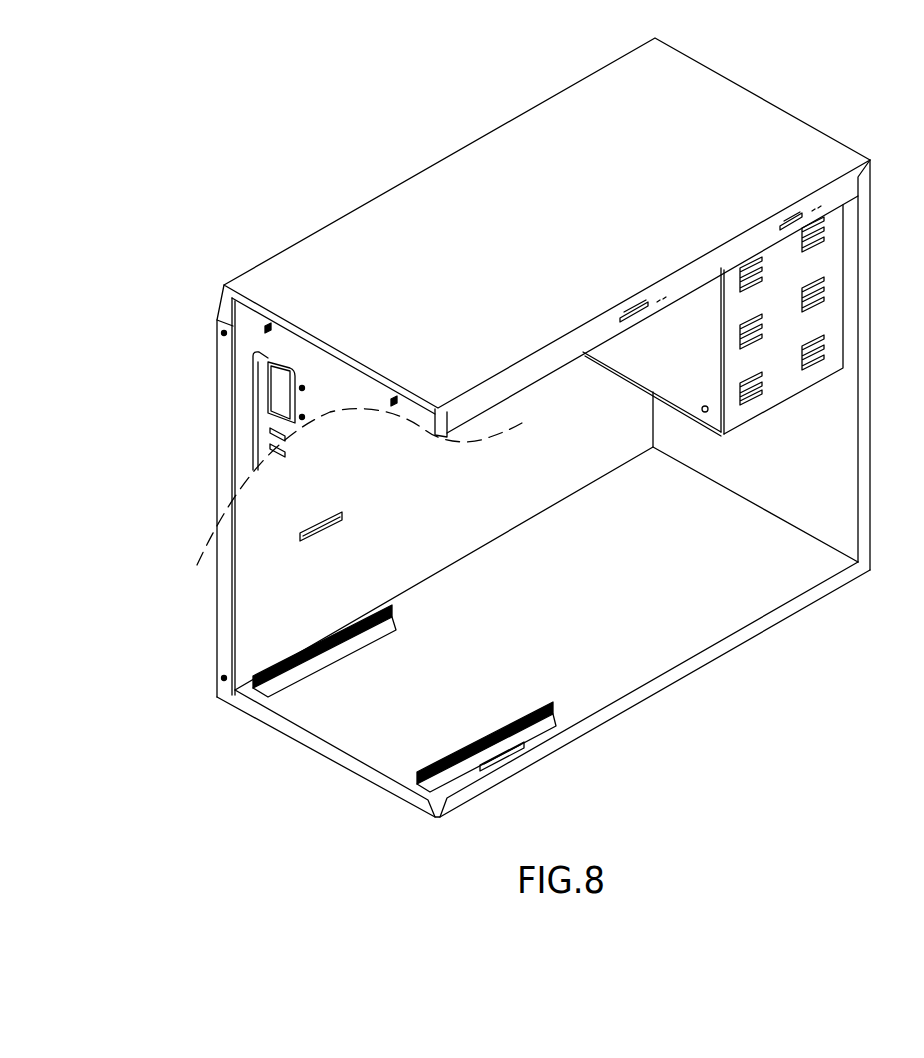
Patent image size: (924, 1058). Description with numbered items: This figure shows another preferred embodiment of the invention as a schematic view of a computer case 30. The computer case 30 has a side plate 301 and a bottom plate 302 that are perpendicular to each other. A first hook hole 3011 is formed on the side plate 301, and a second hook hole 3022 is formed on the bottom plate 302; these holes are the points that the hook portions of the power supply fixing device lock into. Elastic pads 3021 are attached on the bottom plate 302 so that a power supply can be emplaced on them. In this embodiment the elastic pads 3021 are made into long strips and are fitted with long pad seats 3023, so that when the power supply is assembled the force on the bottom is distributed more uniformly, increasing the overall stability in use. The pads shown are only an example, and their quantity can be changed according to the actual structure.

The computer case 30 is at (413, 207).
The side plate 301 is at (273, 493).
The first hook hole 3011 is at (313, 523).
The bottom plate 302 is at (718, 620).
The elastic pads 3021 is at (390, 612).
The second hook hole 3022 is at (553, 724).
The long pad seats 3023 is at (250, 695).